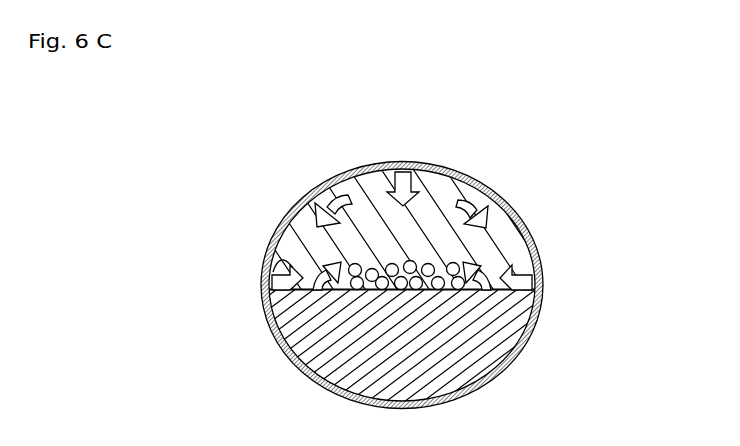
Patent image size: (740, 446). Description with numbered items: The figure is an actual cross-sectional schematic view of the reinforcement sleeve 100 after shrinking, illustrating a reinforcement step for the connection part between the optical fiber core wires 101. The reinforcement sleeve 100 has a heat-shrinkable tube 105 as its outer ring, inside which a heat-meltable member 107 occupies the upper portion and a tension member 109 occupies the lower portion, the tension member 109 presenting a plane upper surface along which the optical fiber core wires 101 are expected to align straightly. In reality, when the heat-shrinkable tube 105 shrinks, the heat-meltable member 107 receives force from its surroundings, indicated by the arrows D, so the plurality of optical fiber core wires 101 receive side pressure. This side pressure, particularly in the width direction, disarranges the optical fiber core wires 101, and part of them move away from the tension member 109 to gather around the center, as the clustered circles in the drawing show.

The reinforcement sleeve 100 is at (487, 177).
The optical fiber core wires 101 is at (353, 264).
The heat-shrinkable tube 105 is at (508, 214).
The heat-meltable member 107 is at (503, 243).
The tension member 109 is at (447, 378).
The arrows D is at (268, 257).